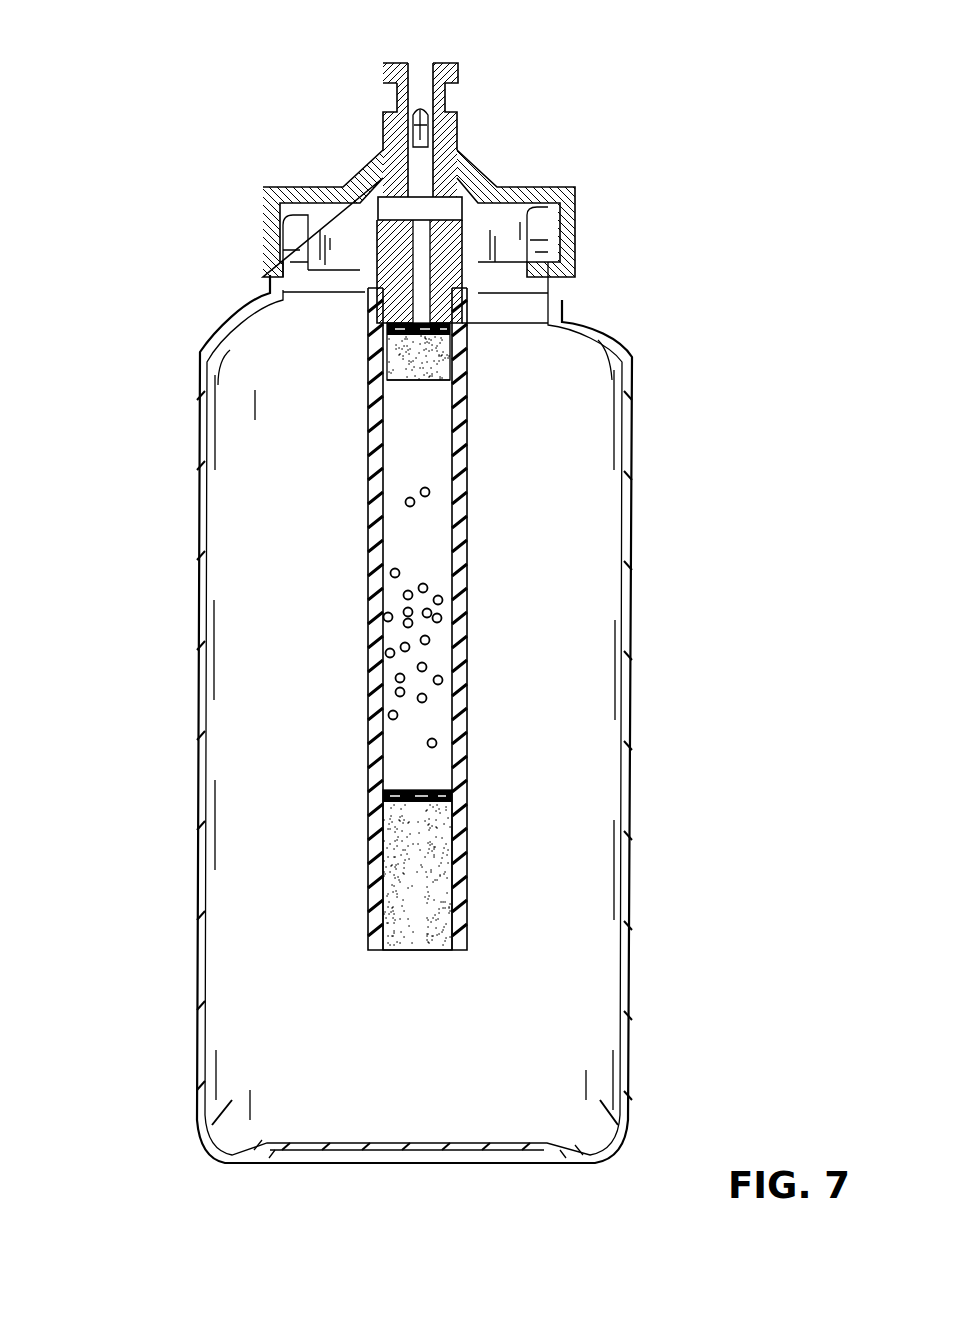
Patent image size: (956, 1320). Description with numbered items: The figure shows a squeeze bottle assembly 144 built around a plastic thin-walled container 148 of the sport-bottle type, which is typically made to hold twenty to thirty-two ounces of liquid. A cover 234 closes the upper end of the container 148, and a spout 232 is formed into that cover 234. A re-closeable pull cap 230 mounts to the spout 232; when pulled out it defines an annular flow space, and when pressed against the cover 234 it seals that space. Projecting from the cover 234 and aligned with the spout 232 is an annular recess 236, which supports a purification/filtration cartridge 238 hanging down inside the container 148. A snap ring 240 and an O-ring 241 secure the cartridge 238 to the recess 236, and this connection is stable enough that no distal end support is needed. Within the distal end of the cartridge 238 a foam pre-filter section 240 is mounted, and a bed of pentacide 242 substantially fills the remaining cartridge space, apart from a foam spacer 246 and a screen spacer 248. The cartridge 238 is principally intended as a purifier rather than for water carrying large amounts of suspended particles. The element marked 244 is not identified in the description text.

The squeeze bottle assembly 144 is at (700, 823).
The container 148 is at (197, 568).
The pull cap 230 is at (452, 70).
The spout 232 is at (455, 112).
The cover 234 is at (280, 238).
The annular recess 236 is at (367, 282).
The purification/filtration cartridge 238 is at (495, 578).
The snap ring / foam pre-filter section 240 is at (486, 200).
The O-ring 241 is at (500, 220).
The bed of pentacide 242 is at (421, 708).
The retaining screen 244 is at (390, 783).
The foam spacer 246 is at (430, 382).
The screen spacer 248 is at (390, 353).